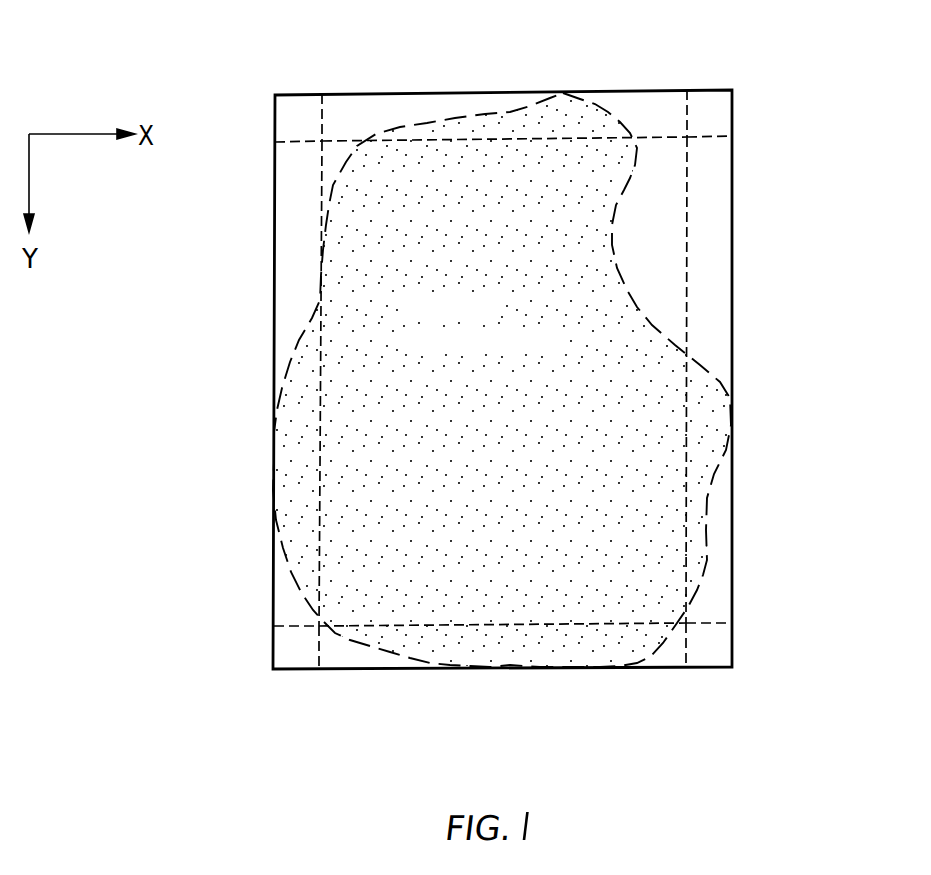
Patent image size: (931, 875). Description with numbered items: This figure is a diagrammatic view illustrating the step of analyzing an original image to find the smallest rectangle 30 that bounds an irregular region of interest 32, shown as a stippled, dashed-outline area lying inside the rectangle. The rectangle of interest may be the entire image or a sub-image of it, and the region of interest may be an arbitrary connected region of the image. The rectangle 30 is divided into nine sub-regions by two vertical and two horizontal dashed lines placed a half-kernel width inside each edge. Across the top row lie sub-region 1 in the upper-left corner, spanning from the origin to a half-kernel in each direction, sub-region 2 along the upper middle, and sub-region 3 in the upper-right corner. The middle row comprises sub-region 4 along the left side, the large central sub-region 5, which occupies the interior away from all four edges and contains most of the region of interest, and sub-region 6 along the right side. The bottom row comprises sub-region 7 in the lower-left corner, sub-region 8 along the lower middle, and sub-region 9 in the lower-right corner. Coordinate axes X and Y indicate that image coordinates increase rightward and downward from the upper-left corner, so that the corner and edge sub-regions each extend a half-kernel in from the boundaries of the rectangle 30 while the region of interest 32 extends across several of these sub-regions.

The sub-region # 1 is at (296, 111).
The sub-region # 2 is at (441, 105).
The sub-region # 3 is at (716, 110).
The sub-region # 4 is at (295, 283).
The sub-region # 5 is at (345, 440).
The sub-region # 6 is at (718, 287).
The sub-region # 7 is at (287, 655).
The sub-region # 8 is at (511, 653).
The sub-region # 9 is at (712, 657).
The rectangle 30 is at (735, 182).
The region of interest 32 is at (626, 292).